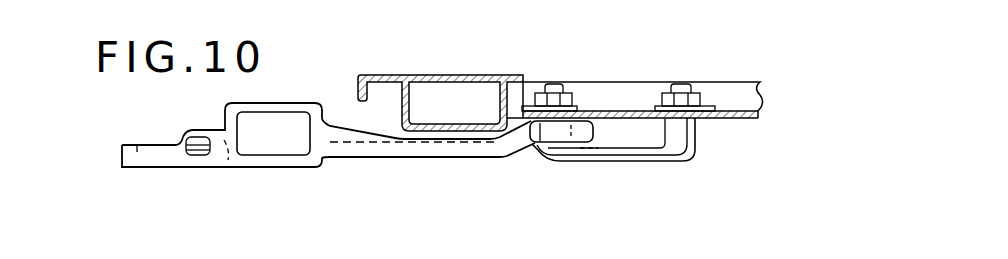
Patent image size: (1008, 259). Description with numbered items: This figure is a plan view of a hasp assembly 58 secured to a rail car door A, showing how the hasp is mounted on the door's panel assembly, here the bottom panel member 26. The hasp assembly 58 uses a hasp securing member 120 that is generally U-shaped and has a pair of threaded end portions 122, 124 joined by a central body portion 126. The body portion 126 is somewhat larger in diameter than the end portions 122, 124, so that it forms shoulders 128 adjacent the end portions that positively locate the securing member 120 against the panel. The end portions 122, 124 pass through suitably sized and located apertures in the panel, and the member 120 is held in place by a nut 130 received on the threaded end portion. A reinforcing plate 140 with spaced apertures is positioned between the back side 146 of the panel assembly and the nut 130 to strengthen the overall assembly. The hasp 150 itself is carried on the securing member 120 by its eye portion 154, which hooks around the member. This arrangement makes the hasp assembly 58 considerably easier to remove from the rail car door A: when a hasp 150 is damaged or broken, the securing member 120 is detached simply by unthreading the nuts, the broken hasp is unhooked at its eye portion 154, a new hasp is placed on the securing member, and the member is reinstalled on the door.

The rail car door A is at (504, 57).
The bottom panel member 26 is at (750, 129).
The hasp assembly 58 is at (408, 169).
The hasp securing member 120 is at (629, 172).
The threaded end portion 122 is at (548, 83).
The threaded end portion 124 is at (677, 85).
The central body portion 126 is at (667, 153).
The shoulders 128 is at (568, 98).
The nut 130 is at (698, 98).
The reinforcing plate 140 is at (632, 110).
The back side 146 is at (762, 102).
The hasp 150 is at (427, 150).
The eye portion 154 is at (541, 155).